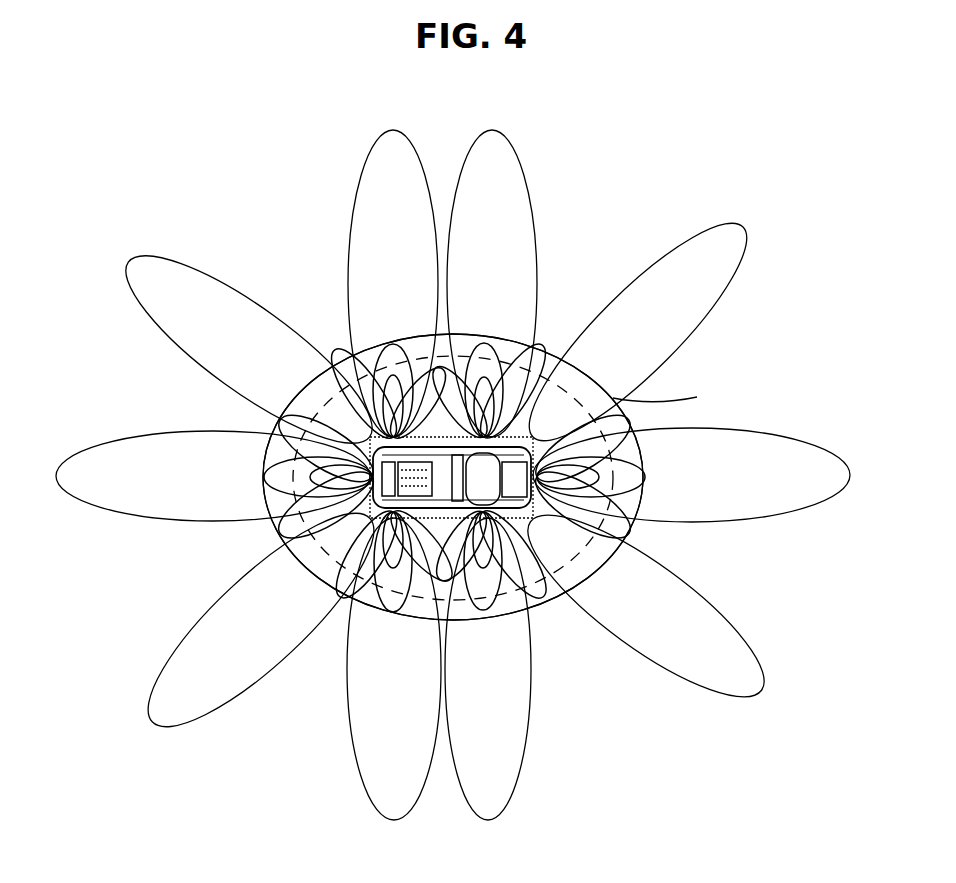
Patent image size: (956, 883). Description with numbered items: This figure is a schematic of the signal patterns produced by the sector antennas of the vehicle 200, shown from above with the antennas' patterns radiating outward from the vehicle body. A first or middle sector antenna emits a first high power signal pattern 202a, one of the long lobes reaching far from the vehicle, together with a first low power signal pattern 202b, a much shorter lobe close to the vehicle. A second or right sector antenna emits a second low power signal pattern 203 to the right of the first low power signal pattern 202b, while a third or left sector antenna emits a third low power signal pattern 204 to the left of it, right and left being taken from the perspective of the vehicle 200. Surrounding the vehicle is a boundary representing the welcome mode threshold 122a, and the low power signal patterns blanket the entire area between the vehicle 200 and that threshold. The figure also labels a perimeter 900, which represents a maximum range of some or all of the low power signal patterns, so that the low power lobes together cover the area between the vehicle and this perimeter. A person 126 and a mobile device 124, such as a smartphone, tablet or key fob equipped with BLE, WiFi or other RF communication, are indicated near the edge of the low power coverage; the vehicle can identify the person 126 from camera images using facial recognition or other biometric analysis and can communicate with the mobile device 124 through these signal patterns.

The vehicle 200 is at (577, 613).
The first high power signal pattern 202a is at (492, 147).
The first low power signal pattern 202b is at (391, 340).
The second low power signal pattern 203 is at (441, 631).
The third low power signal pattern 204 is at (350, 355).
The person 126 is at (552, 338).
The mobile device 124 is at (575, 373).
The welcome mode threshold 122a is at (597, 570).
The perimeter 900 is at (371, 612).